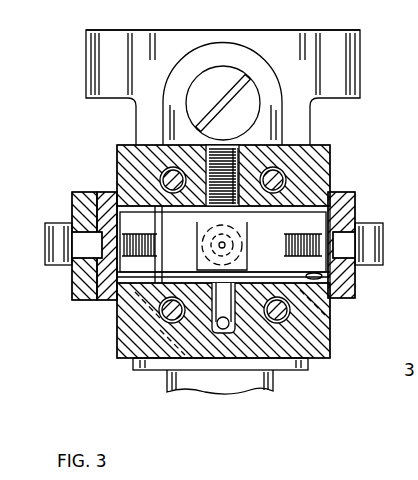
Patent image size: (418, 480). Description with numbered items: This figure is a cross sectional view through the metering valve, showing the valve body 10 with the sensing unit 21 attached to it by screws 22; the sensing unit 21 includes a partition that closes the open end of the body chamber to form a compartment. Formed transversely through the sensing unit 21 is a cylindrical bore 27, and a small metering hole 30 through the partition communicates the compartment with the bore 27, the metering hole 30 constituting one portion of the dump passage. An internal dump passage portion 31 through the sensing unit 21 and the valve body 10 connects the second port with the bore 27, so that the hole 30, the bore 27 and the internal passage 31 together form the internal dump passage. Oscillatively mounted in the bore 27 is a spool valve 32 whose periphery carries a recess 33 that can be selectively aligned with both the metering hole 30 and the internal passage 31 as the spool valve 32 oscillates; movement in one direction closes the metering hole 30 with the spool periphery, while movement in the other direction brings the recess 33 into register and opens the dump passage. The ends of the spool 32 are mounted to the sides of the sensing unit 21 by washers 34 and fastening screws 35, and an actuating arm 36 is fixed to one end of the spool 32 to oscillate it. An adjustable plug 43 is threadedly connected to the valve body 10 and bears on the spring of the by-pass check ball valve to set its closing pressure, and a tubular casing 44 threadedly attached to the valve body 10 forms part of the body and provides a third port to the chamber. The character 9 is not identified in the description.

The valve body 9 is at (169, 25).
The valve body 10 is at (145, 123).
The adjustable plug 43 is at (223, 73).
The sensing unit 21 is at (110, 352).
The screws 22 is at (280, 179).
The spool valve 32 is at (143, 283).
The metering hole 30 is at (225, 240).
The cylindrical bore 27 is at (320, 276).
The actuating arm 36 is at (106, 191).
The washers 34 is at (343, 300).
The fastening screws 35 is at (45, 234).
The recess 33 is at (207, 285).
The internal dump passage portion 31 is at (223, 330).
The tubular casing 44 is at (273, 386).